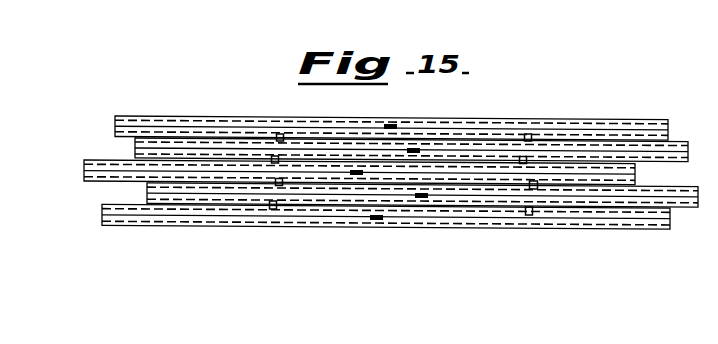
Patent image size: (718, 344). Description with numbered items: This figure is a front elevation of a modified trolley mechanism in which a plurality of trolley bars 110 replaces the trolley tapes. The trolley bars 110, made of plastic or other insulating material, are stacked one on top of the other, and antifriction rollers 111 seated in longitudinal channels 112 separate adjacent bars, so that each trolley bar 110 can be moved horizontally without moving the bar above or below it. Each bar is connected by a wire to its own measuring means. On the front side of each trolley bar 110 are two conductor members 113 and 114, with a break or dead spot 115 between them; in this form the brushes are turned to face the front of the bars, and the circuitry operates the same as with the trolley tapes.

The trolley bar 110 is at (235, 117).
The antifriction roller 111 is at (282, 137).
The longitudinal channel 112 is at (223, 210).
The conductor member 113 is at (327, 126).
The conductor member 114 is at (528, 137).
The break or dead spot 115 is at (388, 127).